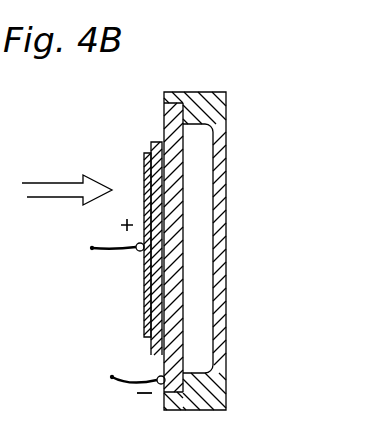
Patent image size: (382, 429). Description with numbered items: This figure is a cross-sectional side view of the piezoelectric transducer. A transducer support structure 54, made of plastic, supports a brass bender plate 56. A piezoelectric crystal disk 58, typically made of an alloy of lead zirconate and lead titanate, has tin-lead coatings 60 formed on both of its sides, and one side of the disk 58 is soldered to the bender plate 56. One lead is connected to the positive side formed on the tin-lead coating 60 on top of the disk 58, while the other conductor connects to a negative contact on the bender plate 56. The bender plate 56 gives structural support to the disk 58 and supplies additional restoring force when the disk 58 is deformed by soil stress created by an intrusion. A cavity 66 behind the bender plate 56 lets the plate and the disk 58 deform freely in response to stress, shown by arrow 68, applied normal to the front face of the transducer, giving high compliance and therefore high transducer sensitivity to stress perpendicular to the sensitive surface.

The transducer support structure 54 is at (192, 92).
The bender plate 56 is at (164, 123).
The piezoelectric crystal disk 58 is at (148, 346).
The tin-lead coatings 60 is at (146, 165).
The cavity 66 is at (200, 177).
The stress arrow 68 is at (52, 190).